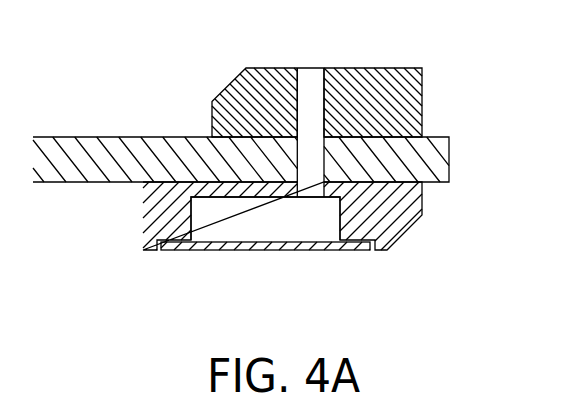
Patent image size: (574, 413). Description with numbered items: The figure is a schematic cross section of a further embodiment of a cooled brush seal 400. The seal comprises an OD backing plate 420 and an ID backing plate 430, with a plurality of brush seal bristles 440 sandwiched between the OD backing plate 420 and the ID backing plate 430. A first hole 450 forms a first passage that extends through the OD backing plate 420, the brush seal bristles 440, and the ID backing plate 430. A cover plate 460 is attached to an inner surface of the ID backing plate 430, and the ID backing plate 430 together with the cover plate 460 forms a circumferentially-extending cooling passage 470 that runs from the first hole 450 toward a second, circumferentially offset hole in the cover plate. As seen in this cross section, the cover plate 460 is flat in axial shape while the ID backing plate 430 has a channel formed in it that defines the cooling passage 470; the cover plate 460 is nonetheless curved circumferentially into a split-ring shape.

The cooled brush seal 400 is at (138, 78).
The OD backing plate 420 is at (423, 98).
The ID backing plate 430 is at (408, 232).
The brush seal bristles 440 is at (450, 155).
The first hole 450 is at (312, 67).
The cover plate 460 is at (280, 252).
The cooling passage 470 is at (260, 220).